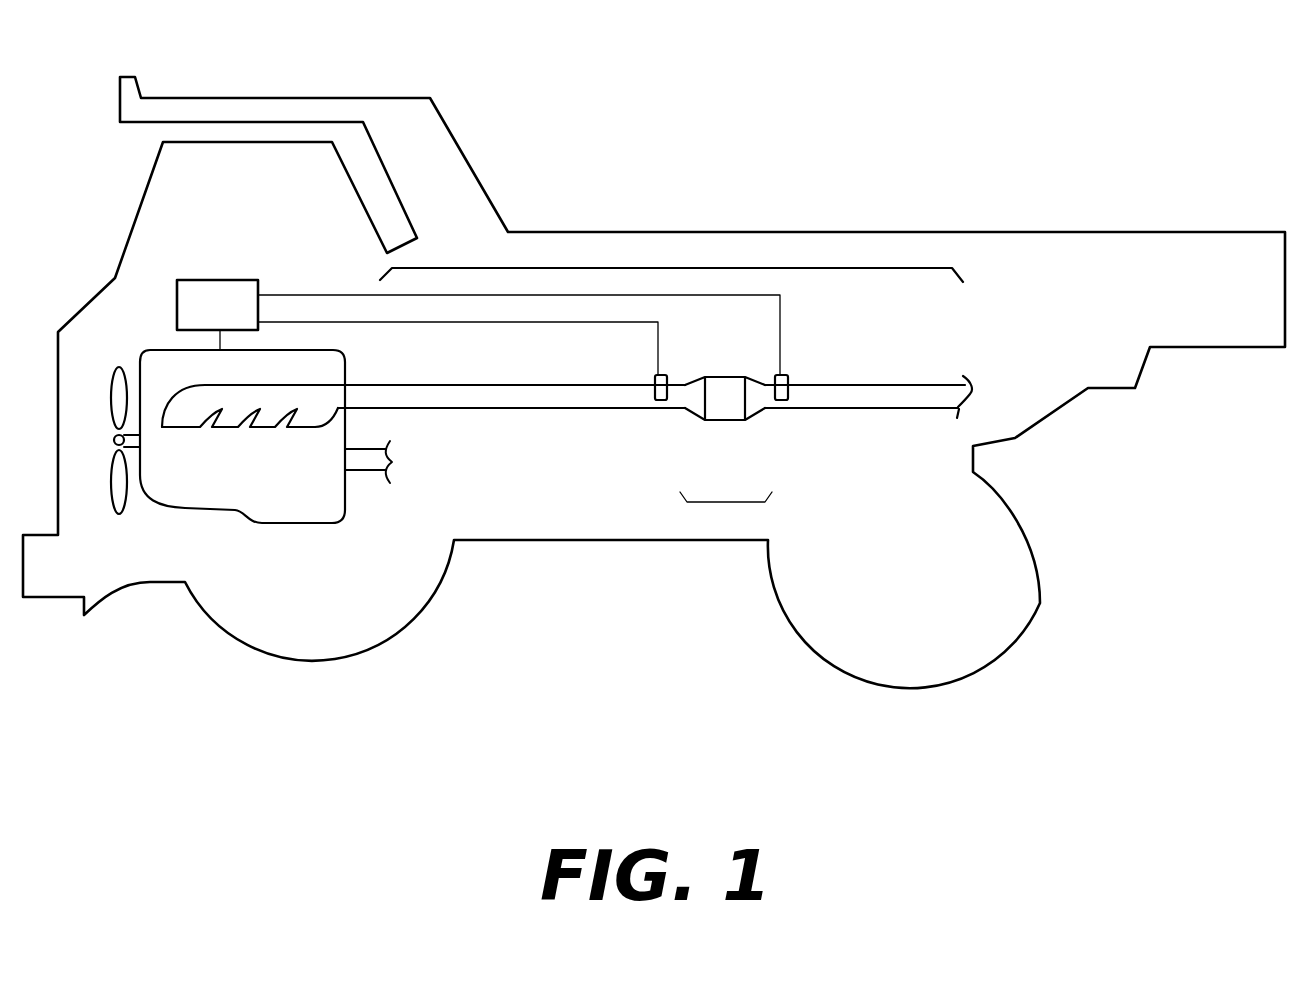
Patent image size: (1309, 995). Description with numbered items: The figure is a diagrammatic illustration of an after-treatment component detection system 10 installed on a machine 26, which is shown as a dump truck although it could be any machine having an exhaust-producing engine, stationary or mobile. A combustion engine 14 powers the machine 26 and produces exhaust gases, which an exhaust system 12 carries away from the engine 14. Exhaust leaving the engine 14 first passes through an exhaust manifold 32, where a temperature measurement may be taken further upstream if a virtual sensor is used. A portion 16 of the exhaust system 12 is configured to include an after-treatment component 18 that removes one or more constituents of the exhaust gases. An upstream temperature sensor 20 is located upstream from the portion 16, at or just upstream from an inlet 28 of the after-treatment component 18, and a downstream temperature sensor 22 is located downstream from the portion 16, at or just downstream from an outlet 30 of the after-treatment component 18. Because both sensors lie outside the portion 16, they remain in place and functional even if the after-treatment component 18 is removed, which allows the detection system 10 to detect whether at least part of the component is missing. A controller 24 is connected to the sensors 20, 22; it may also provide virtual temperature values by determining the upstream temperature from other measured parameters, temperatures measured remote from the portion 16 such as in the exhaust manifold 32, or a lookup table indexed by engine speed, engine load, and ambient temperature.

The after-treatment component detection system 10 is at (280, 258).
The exhaust system 12 is at (668, 268).
The combustion engine 14 is at (283, 538).
The portion of exhaust system 16 is at (718, 503).
The after-treatment component 18 is at (715, 423).
The upstream temperature sensor 20 is at (653, 380).
The downstream temperature sensor 22 is at (783, 378).
The controller 24 is at (236, 322).
The machine 26 is at (972, 124).
The inlet 28 is at (668, 422).
The outlet 30 is at (780, 424).
The exhaust manifold 32 is at (273, 409).